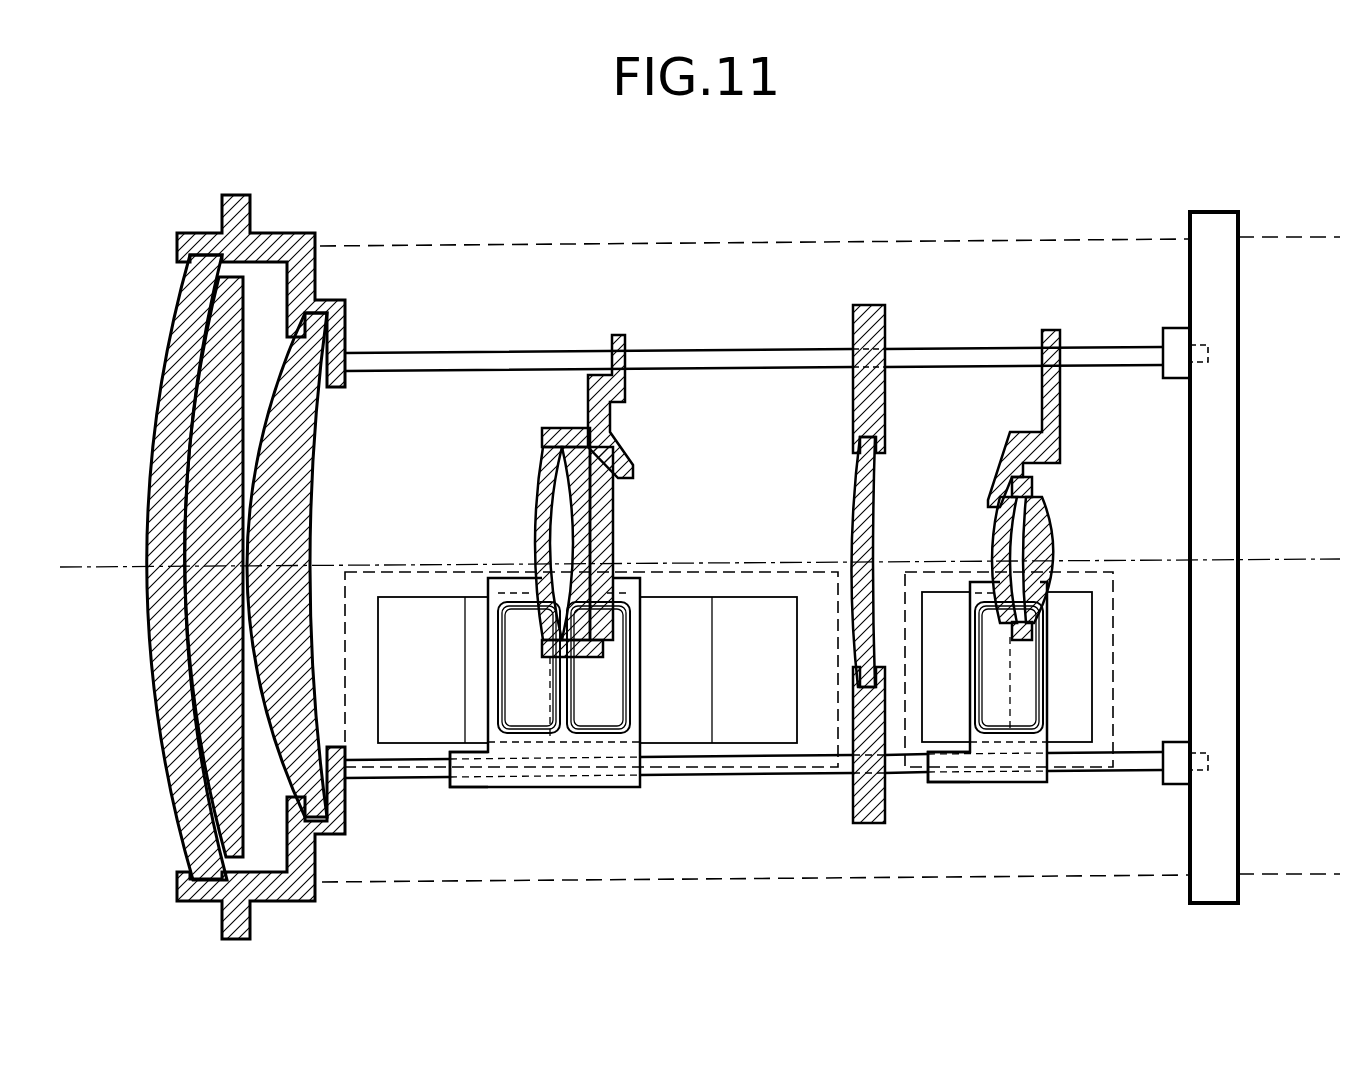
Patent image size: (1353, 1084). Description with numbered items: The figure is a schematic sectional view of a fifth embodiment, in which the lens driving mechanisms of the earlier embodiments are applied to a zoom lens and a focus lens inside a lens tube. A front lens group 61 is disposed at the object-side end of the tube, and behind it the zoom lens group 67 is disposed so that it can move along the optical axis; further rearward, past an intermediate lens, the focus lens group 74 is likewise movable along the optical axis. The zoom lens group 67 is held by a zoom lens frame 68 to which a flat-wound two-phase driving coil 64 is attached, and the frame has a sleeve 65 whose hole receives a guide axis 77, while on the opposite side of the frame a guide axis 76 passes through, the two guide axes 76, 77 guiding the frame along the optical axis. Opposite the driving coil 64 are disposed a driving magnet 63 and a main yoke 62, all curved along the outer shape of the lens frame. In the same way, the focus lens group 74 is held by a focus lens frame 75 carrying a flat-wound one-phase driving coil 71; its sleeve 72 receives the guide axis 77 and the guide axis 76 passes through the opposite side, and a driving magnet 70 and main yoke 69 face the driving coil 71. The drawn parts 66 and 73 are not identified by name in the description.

The front lens group 61 is at (160, 378).
The main yoke 62 is at (362, 590).
The driving magnet 63 is at (770, 607).
The flat-wound 2-phase driving coil 64 is at (557, 740).
The sleeve 65 is at (467, 788).
The second lens frame 66 is at (505, 588).
The zoom lens group 67 is at (543, 490).
The zoom lens frame 68 is at (553, 431).
The main yoke 69 is at (1100, 708).
The driving magnet 70 is at (1075, 626).
The flat-wound 1-phase driving coil 71 is at (1028, 736).
The sleeve 72 is at (988, 784).
The third lens group lens 73 is at (982, 581).
The focus lens group 74 is at (1087, 522).
The focus lens frame 75 is at (1007, 453).
The guide axis 76 is at (497, 352).
The guide axis 77 is at (720, 777).